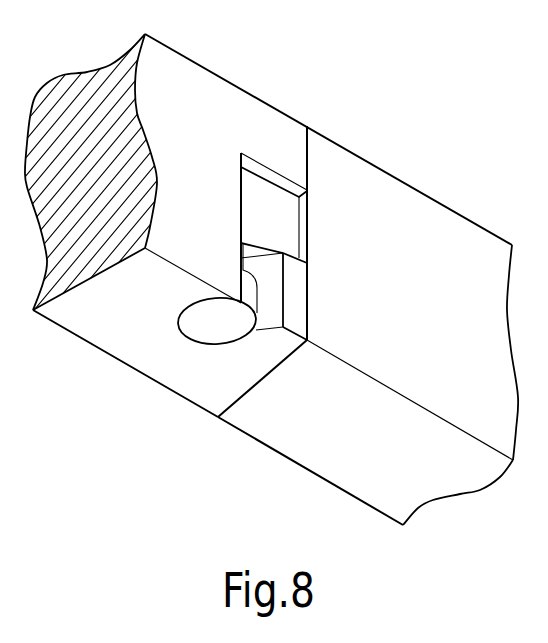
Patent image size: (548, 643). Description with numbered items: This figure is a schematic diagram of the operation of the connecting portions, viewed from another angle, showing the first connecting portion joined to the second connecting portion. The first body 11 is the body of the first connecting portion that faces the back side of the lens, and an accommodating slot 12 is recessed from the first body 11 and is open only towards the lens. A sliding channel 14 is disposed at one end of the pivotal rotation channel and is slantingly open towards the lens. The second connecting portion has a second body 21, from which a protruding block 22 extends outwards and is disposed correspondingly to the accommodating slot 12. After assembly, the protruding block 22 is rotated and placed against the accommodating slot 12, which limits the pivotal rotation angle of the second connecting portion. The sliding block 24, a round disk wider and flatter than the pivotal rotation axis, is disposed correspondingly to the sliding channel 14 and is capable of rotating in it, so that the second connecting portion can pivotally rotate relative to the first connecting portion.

The first body 11 is at (198, 108).
The accommodating slot 12 is at (272, 170).
The sliding channel 14 is at (180, 322).
The second body 21 is at (378, 223).
The protruding block 22 is at (305, 203).
The sliding block 24 is at (212, 325).